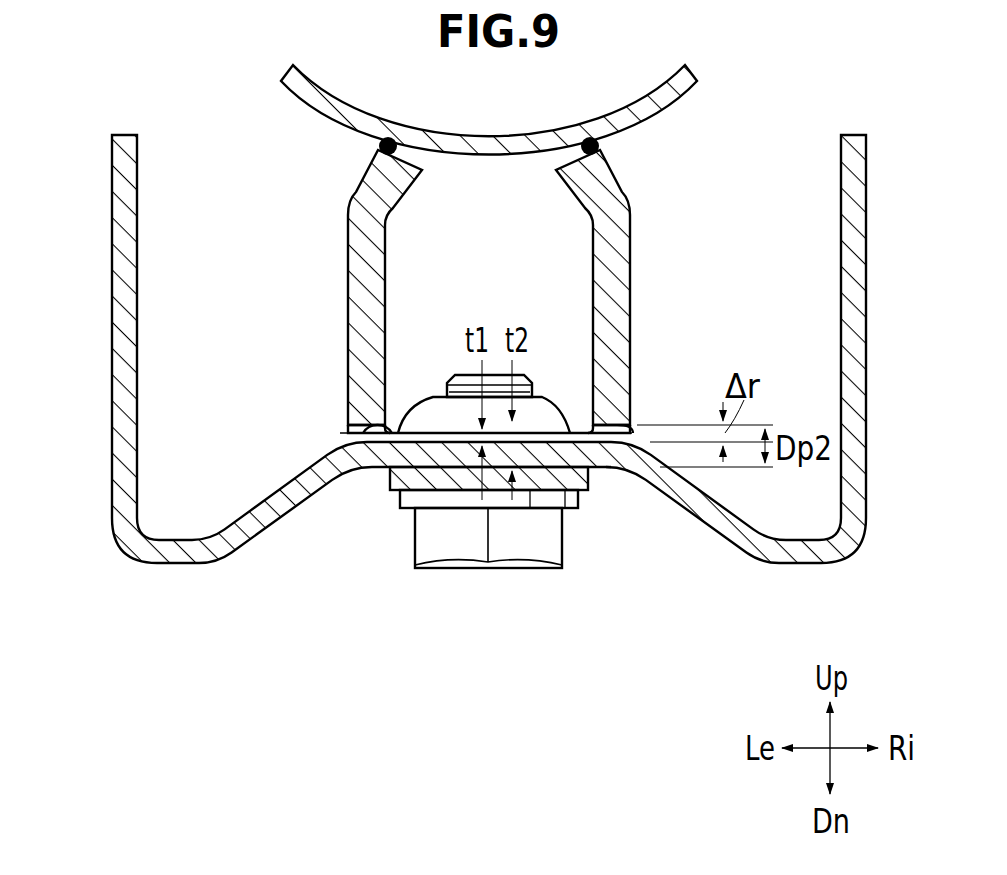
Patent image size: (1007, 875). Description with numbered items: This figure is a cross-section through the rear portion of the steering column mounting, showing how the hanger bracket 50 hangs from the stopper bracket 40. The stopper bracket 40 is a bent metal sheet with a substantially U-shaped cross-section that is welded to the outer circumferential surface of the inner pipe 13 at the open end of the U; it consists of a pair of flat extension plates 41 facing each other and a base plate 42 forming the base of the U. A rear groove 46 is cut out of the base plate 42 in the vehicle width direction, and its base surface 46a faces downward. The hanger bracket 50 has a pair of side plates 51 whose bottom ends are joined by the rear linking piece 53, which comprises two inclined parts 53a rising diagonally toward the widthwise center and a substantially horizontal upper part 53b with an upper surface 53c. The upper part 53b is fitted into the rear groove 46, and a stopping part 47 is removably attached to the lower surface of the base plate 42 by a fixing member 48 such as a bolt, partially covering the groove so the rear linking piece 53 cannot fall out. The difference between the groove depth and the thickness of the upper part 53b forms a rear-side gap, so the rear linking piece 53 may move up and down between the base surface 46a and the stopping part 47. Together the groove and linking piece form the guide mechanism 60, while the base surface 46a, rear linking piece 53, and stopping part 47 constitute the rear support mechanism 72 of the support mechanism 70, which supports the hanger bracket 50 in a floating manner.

The inner pipe 13 is at (306, 103).
The stopper bracket 40 is at (426, 285).
The extension plate 41 is at (591, 280).
The base plate 42 is at (438, 395).
The rear groove 46 is at (474, 412).
The base surface of the rear groove 46a is at (403, 428).
The stopping part 47 is at (437, 480).
The fixing member 48 is at (522, 550).
The hanger bracket 50 is at (488, 416).
The side plate 51 is at (111, 346).
The rear linking piece 53 is at (489, 582).
The inclined part 53a is at (264, 517).
The upper part 53b is at (478, 553).
The upper surface of the upper part 53c is at (572, 431).
The guide mechanism 60 is at (332, 416).
The support mechanism 70 is at (619, 547).
The rear support mechanism 72 is at (608, 488).